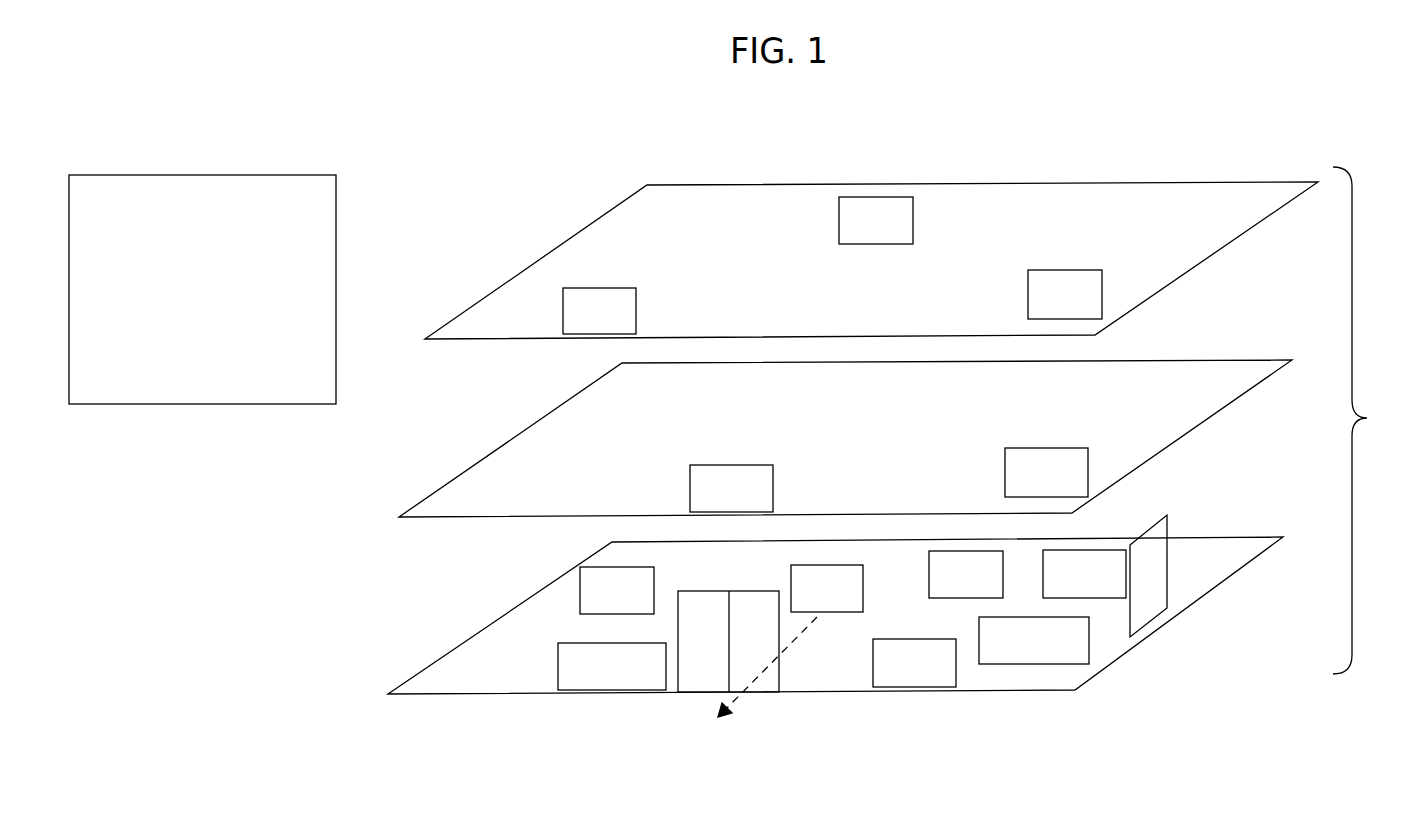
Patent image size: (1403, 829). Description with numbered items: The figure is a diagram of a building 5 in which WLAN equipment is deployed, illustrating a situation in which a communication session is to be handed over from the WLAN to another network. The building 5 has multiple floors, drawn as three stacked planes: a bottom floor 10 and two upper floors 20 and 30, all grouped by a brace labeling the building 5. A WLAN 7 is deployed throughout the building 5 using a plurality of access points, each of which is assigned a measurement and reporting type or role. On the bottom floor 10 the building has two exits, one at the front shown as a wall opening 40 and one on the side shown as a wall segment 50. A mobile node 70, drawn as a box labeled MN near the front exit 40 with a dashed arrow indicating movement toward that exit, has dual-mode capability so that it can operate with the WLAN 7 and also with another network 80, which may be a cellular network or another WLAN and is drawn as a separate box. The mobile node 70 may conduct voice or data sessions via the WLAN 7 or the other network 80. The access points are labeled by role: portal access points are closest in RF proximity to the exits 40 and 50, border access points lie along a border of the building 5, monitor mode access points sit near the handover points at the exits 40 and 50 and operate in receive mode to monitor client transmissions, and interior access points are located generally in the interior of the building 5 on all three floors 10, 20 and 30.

The building 5 is at (1365, 420).
The WLAN 7 is at (383, 584).
The bottom floor 10 is at (1250, 559).
The upper floor 20 is at (1185, 434).
The upper floor 30 is at (1207, 256).
The front exit 40 is at (715, 590).
The side exit 50 is at (1167, 560).
The mobile node (MN) 70 is at (791, 575).
The other network 80 is at (297, 175).